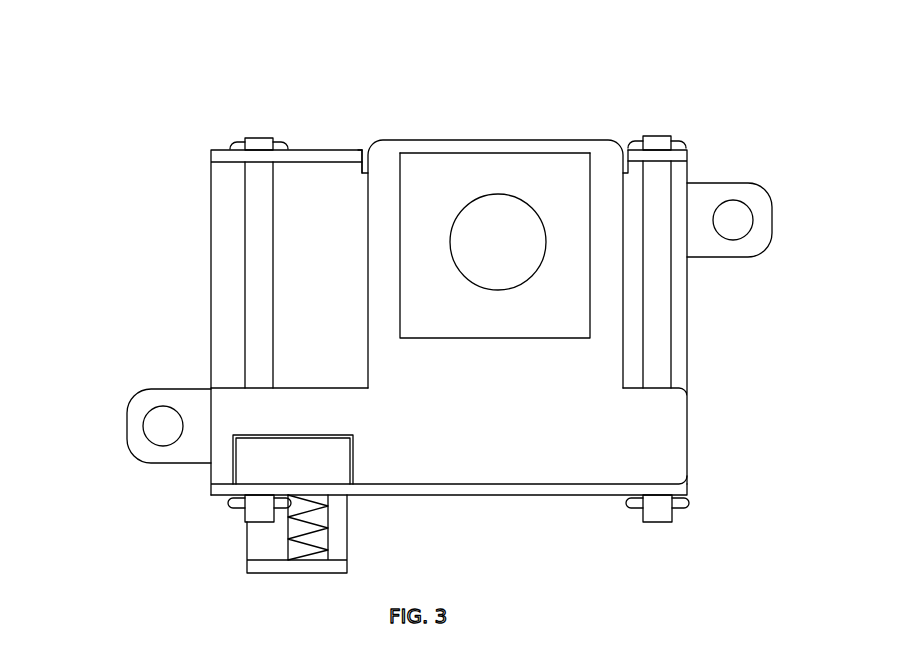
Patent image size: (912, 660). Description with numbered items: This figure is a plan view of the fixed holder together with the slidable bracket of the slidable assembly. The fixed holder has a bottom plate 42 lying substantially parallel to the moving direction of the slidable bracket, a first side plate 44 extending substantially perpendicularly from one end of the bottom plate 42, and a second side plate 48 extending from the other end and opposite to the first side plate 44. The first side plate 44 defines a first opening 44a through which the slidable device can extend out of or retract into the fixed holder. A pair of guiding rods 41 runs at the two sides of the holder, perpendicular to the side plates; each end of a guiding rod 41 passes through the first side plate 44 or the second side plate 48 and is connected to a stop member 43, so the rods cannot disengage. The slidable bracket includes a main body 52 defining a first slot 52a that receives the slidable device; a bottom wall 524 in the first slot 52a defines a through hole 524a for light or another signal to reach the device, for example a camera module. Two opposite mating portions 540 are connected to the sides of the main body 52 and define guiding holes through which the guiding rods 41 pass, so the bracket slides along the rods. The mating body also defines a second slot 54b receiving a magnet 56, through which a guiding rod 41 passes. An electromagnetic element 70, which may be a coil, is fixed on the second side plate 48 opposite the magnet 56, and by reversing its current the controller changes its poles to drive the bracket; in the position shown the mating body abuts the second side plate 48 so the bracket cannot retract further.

The guiding rod 41 is at (258, 212).
The bottom plate 42 is at (305, 283).
The stop member 43 is at (233, 141).
The first side plate 44 is at (677, 156).
The first opening 44a is at (364, 150).
The second side plate 48 is at (670, 492).
The main body 52 is at (607, 278).
The first slot 52a is at (540, 153).
The bottom wall 524 is at (432, 178).
The through hole 524a is at (540, 208).
The mating portion 540 is at (238, 402).
The second slot 54b is at (352, 478).
The magnet 56 is at (263, 463).
The electromagnetic element 70 is at (310, 537).